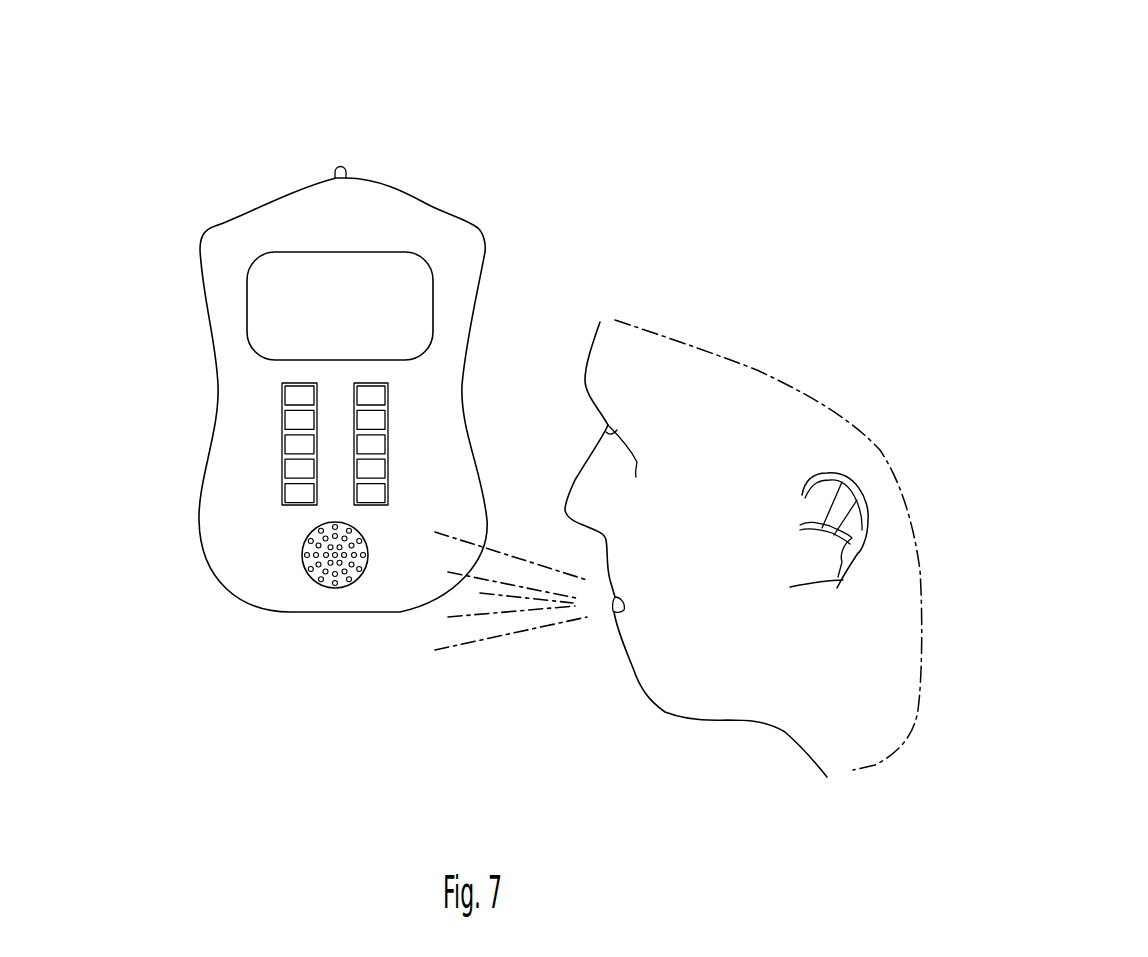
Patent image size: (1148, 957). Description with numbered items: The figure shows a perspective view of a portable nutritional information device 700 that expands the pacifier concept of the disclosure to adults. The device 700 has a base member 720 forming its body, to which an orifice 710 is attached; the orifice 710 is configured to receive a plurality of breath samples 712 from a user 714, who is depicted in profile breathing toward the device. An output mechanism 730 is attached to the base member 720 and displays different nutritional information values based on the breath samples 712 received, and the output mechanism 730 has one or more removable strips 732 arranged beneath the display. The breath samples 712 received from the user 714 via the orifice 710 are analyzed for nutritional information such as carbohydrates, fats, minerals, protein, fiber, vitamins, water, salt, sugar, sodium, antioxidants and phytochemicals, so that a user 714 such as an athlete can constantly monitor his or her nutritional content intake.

The portable nutritional information device 700 is at (728, 96).
The base member 720 is at (425, 203).
The output mechanism 730 is at (280, 308).
The removable strips 732 is at (282, 458).
The orifice 710 is at (302, 557).
The breath samples 712 is at (510, 632).
The user 714 is at (613, 612).